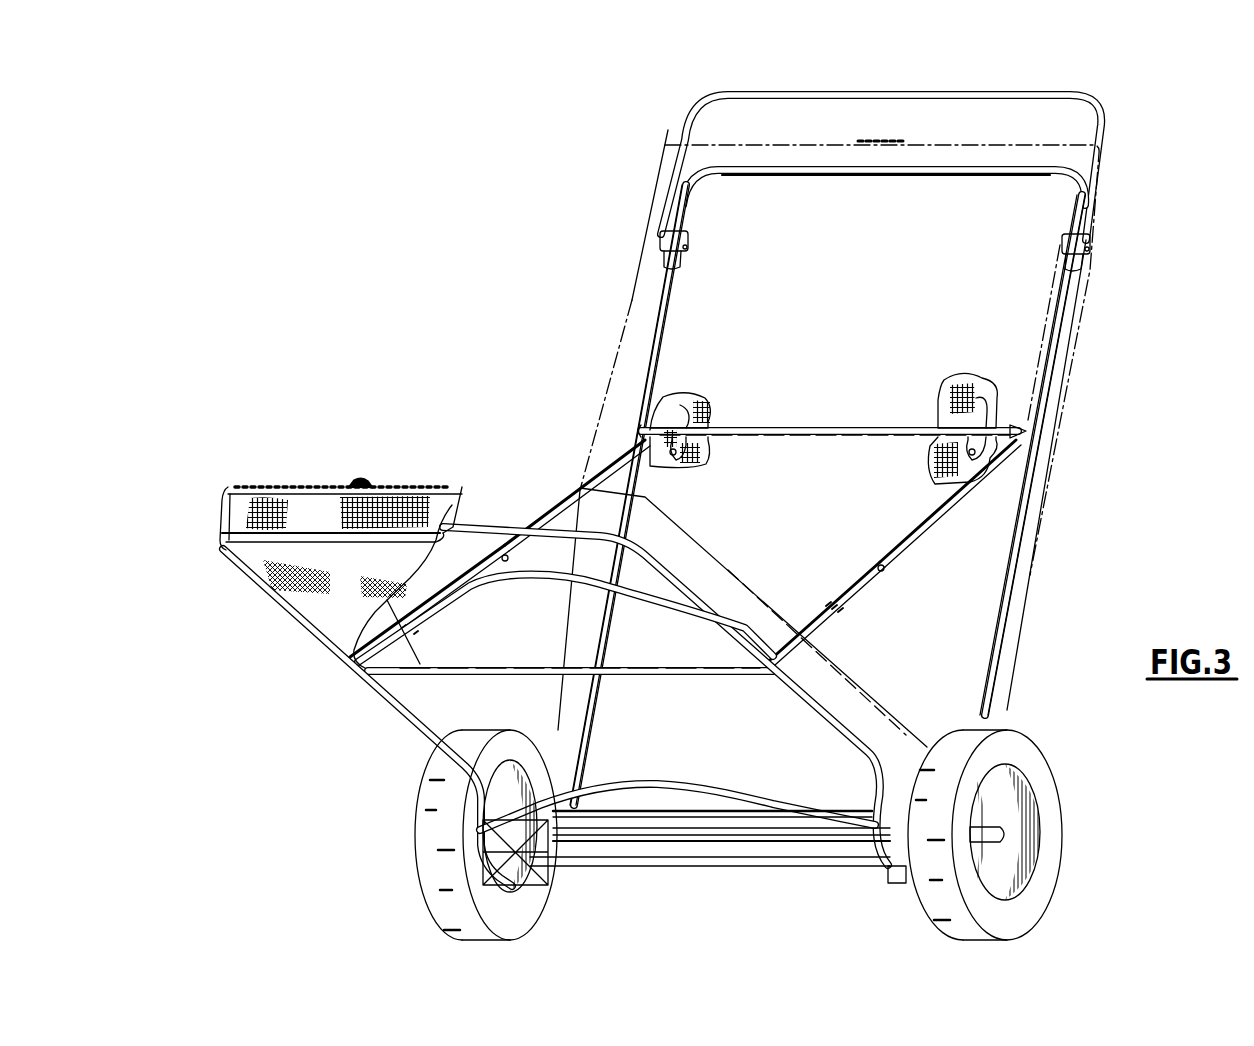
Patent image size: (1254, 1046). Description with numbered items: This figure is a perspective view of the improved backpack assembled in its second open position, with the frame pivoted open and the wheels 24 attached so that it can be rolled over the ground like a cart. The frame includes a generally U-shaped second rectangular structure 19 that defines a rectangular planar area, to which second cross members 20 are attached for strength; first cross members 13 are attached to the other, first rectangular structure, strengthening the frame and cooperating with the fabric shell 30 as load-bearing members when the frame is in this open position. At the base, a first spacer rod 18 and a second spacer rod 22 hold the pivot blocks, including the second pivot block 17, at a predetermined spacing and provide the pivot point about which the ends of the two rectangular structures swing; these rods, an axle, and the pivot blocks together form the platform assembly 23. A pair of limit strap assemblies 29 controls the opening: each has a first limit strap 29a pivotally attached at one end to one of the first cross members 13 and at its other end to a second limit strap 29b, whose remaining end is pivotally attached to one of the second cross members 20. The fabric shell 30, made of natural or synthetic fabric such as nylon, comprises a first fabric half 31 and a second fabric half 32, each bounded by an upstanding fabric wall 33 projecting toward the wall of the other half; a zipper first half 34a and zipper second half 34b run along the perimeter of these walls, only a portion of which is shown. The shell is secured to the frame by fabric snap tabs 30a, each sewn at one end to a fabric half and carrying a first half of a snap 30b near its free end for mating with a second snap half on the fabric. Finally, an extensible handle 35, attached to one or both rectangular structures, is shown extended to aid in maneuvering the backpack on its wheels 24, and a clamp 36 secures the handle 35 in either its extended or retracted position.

The first cross members 13 is at (498, 666).
The second pivot block 17 is at (888, 876).
The first spacer rod 18 is at (714, 866).
The second rectangular structure 19 is at (1005, 567).
The second cross members 20 is at (762, 426).
The second spacer rod 22 is at (830, 808).
The platform assembly 23 is at (647, 843).
The wheels 24 is at (1060, 782).
The limit strap assembly 29 is at (685, 530).
The first limit strap 29a is at (446, 621).
The second limit strap 29b is at (604, 440).
The fabric shell 30 is at (612, 296).
The fabric snap tab 30a is at (690, 402).
The first half of a snap 30b is at (684, 470).
The first fabric half 31 is at (222, 522).
The second fabric half 32 is at (1100, 194).
The upstanding fabric wall 33 is at (683, 148).
The zipper first half 34a is at (360, 484).
The zipper second half 34b is at (880, 146).
The extensible handle 35 is at (958, 94).
The clamp 36 is at (691, 246).